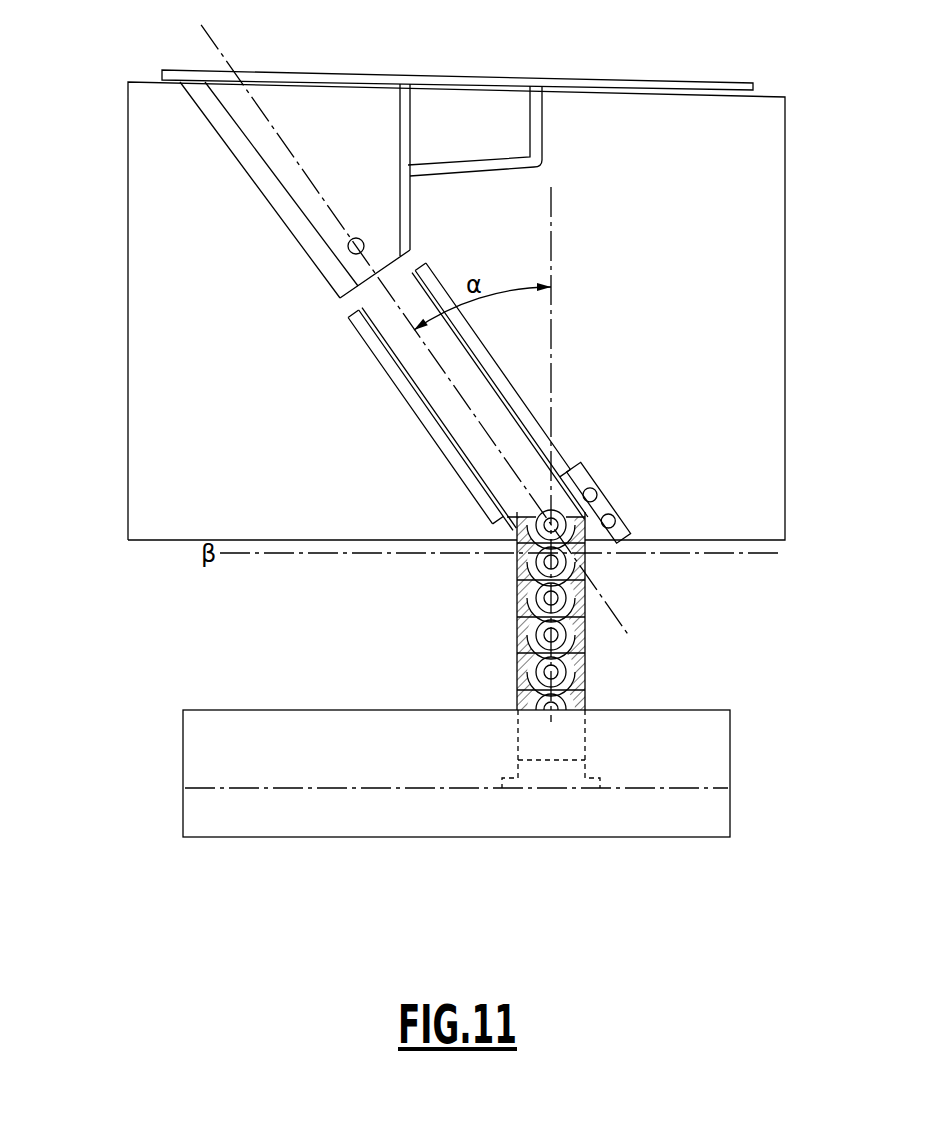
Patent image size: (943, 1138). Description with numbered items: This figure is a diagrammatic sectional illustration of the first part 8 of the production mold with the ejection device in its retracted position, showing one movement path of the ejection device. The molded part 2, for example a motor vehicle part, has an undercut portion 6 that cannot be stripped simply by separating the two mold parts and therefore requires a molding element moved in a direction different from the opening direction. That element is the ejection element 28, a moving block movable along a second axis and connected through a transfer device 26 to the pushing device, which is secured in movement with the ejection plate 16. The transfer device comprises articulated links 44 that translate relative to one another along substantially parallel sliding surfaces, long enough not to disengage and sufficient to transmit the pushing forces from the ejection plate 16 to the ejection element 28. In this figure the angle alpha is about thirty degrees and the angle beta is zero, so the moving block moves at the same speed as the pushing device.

The molded part 2 is at (340, 72).
The undercut portion 6 is at (517, 147).
The first part 8 is at (145, 455).
The ejection plate 16 is at (268, 812).
The transfer device 26 is at (258, 130).
The ejection element 28 is at (283, 202).
The articulated links 44 is at (573, 643).